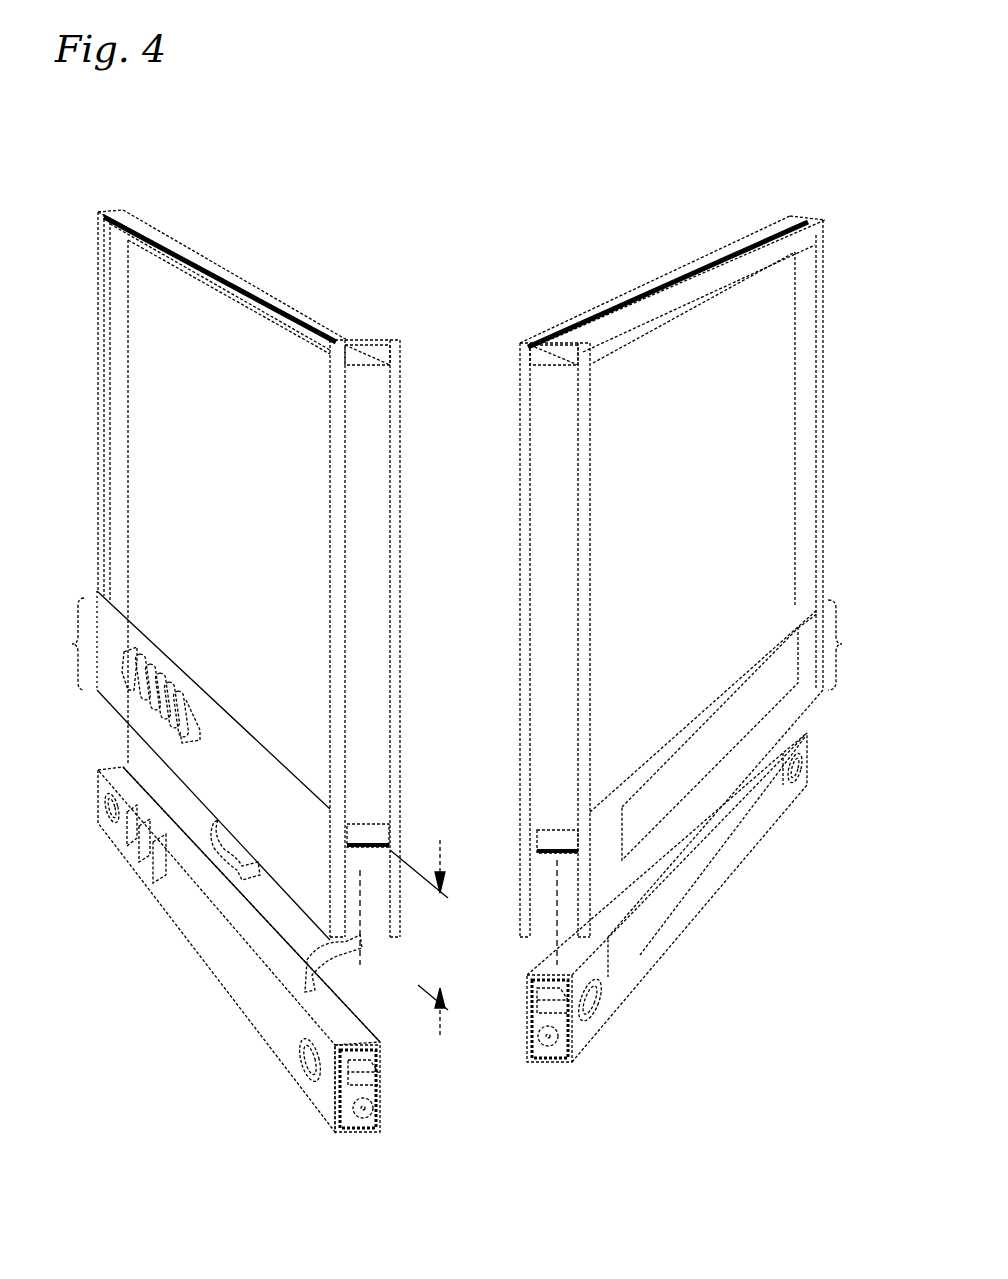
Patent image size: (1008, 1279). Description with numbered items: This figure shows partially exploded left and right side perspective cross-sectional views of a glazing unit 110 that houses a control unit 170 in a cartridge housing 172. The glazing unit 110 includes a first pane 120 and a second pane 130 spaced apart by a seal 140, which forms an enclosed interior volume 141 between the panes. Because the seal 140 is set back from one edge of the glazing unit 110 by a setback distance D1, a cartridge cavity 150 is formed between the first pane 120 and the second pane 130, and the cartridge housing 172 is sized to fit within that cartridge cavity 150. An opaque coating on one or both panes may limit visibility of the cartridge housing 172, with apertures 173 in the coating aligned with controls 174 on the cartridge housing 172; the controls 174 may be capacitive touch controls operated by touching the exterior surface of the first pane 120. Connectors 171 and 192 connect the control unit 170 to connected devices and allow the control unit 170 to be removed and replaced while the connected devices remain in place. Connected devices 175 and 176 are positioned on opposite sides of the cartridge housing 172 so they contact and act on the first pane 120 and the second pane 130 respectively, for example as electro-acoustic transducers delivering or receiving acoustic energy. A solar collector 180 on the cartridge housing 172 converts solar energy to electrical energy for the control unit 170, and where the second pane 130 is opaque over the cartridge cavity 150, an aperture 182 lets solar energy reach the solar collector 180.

The glazing unit 110 is at (240, 218).
The first pane 120 is at (296, 292).
The second pane 130 is at (397, 380).
The seal 140 is at (356, 362).
The enclosed interior volume 141 is at (368, 433).
The cartridge cavity 150 is at (475, 812).
The control unit 170 is at (207, 1006).
The connector 171 is at (310, 960).
The cartridge housing 172 is at (195, 930).
The apertures 173 is at (124, 684).
The controls 174 is at (140, 858).
The connected device 175 is at (108, 815).
The connected device 176 is at (797, 785).
The solar collector 180 is at (723, 845).
The aperture 182 is at (657, 287).
The connector 192 is at (257, 887).
The setback distance D1 is at (422, 937).